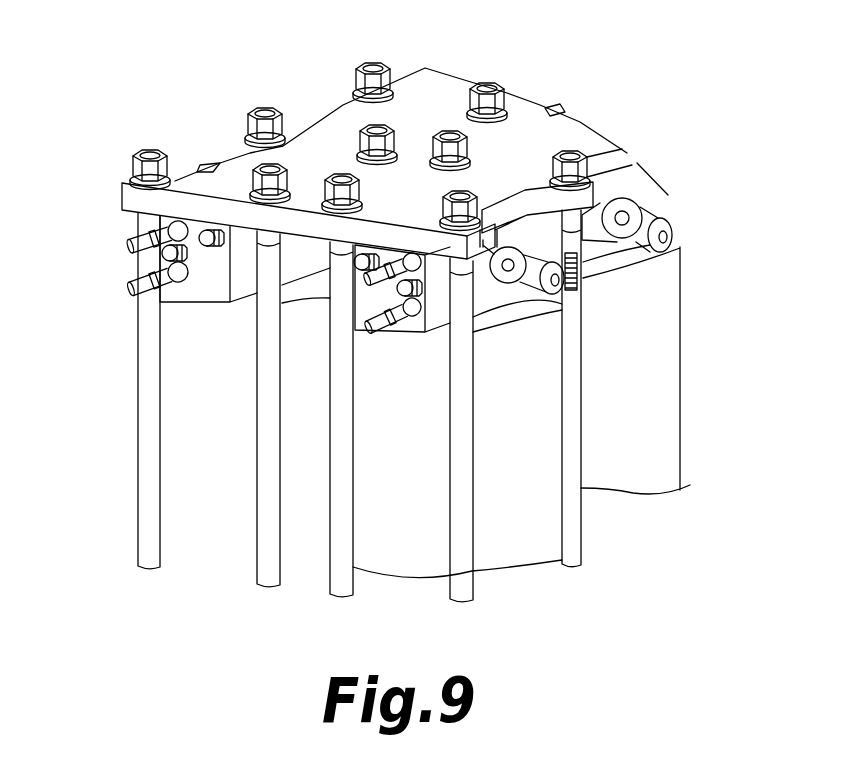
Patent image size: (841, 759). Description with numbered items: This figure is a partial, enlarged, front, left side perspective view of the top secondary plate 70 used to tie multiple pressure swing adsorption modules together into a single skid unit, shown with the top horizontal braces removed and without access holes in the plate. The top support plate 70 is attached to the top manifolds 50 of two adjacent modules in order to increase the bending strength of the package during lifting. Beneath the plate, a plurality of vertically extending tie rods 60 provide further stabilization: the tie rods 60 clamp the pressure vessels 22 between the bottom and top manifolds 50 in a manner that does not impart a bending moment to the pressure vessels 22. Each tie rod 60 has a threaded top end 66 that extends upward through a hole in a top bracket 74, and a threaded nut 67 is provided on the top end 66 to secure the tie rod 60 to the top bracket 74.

The top support plate 70 is at (337, 132).
The top bracket 74 is at (237, 147).
The threaded top end 66 is at (285, 166).
The threaded nut 67 is at (440, 203).
The top manifold 50 is at (190, 294).
The pressure vessel 22 is at (530, 448).
The tie rod 60 is at (458, 478).